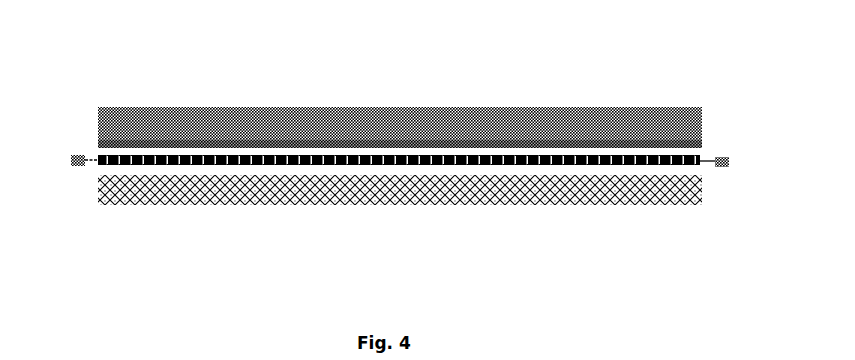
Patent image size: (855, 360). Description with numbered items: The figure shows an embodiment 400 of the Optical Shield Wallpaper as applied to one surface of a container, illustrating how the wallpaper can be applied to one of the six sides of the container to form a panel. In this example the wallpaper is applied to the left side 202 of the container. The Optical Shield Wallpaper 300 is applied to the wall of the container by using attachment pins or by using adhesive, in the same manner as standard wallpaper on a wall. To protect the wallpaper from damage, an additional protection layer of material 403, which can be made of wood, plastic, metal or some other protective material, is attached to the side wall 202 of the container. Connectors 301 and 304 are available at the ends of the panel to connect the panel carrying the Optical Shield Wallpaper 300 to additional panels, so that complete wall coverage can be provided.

The Optical Shield Wallpaper panel 400 is at (383, 46).
The left side of the container 202 is at (108, 103).
The Optical Shield Wallpaper 300 is at (100, 154).
The connector 301 is at (69, 153).
The connector 304 is at (726, 153).
The protection layer of material 403 is at (96, 184).